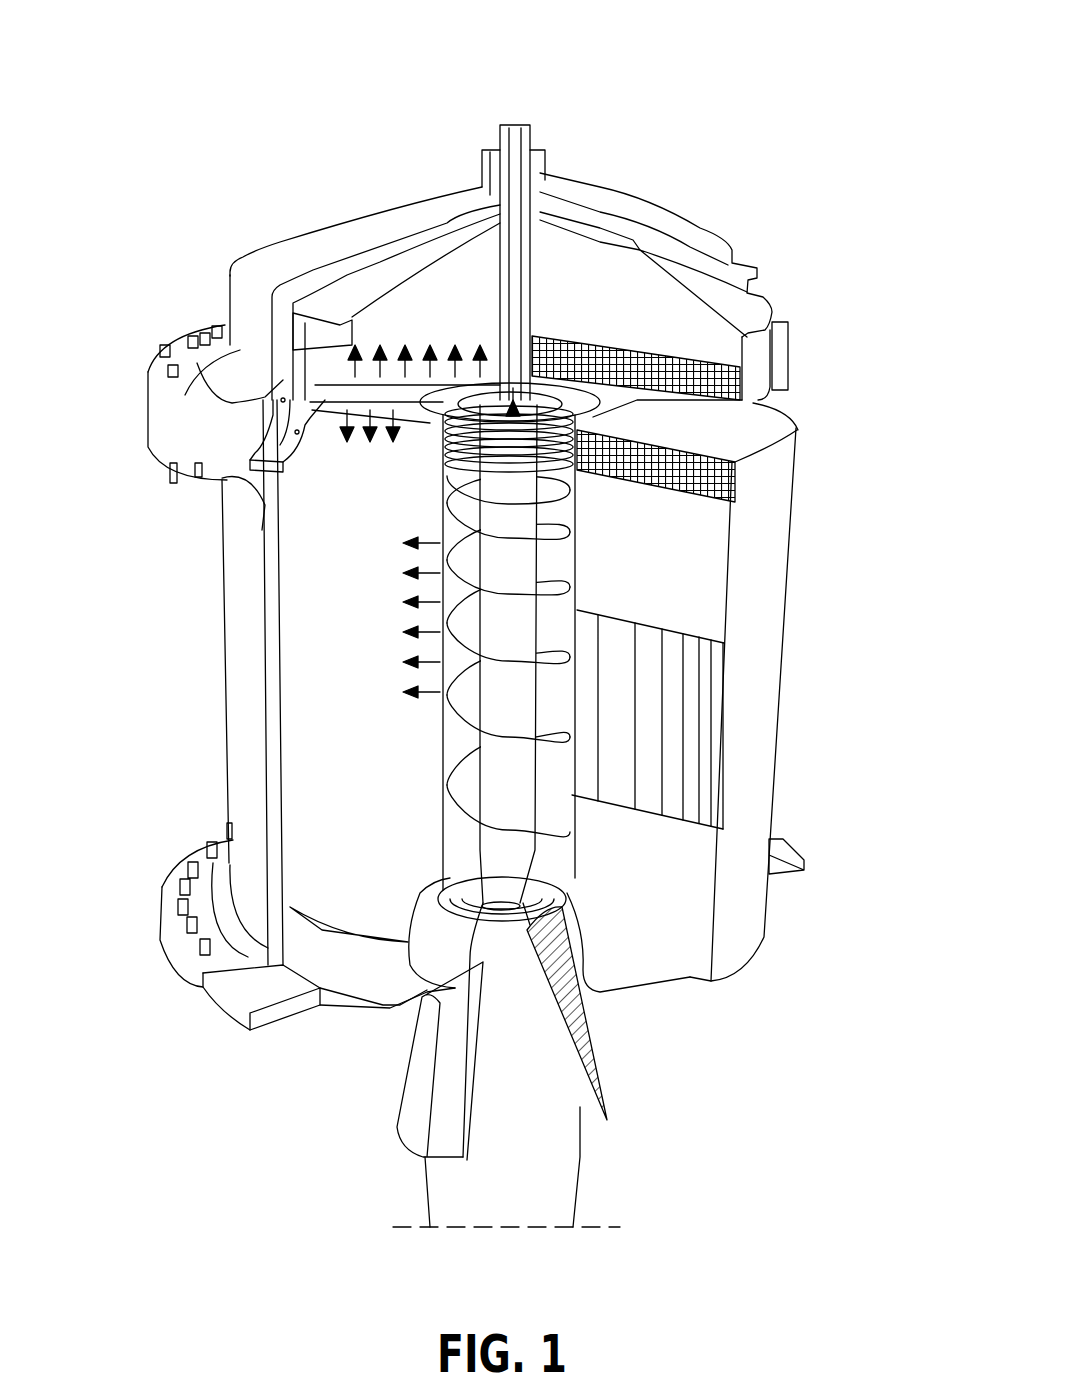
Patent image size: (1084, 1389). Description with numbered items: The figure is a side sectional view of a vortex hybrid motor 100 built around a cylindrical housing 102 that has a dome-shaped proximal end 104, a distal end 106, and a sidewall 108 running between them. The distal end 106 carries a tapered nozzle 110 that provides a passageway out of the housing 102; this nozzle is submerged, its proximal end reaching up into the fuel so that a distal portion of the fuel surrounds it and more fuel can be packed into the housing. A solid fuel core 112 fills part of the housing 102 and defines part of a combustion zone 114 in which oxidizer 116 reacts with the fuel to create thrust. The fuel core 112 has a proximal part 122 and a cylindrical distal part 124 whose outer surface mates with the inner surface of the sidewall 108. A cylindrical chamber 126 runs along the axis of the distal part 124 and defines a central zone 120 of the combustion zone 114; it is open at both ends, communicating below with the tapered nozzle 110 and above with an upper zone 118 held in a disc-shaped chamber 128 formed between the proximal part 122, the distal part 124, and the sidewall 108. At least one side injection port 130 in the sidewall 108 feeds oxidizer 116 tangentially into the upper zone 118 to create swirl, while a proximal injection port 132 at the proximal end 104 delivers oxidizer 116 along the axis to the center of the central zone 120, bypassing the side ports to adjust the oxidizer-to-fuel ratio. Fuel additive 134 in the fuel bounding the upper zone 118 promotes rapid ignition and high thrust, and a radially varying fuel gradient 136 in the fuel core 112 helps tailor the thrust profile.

The vortex hybrid motor 100 is at (167, 66).
The housing 102 is at (160, 425).
The proximal end 104 is at (280, 258).
The distal end 106 is at (168, 960).
The sidewall 108 is at (225, 652).
The tapered nozzle 110 is at (603, 1112).
The fuel core 112 is at (790, 640).
The combustion zone 114 is at (493, 748).
The oxidizer 116 is at (427, 417).
The upper zone 118 is at (783, 427).
The central zone 120 is at (548, 688).
The proximal part 122 is at (682, 325).
The distal part 124 is at (746, 840).
The cylindrical chamber 126 is at (578, 548).
The disc-shaped chamber 128 is at (775, 403).
The side injection port 130 is at (275, 400).
The proximal injection port 132 is at (515, 125).
The fuel additive 134 is at (760, 405).
The fuel gradient 136 is at (690, 738).